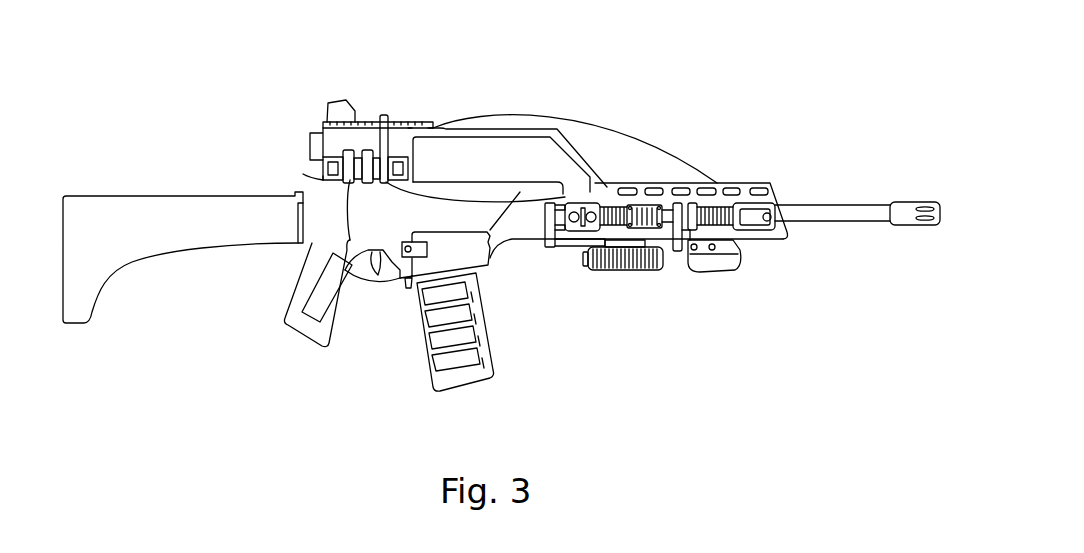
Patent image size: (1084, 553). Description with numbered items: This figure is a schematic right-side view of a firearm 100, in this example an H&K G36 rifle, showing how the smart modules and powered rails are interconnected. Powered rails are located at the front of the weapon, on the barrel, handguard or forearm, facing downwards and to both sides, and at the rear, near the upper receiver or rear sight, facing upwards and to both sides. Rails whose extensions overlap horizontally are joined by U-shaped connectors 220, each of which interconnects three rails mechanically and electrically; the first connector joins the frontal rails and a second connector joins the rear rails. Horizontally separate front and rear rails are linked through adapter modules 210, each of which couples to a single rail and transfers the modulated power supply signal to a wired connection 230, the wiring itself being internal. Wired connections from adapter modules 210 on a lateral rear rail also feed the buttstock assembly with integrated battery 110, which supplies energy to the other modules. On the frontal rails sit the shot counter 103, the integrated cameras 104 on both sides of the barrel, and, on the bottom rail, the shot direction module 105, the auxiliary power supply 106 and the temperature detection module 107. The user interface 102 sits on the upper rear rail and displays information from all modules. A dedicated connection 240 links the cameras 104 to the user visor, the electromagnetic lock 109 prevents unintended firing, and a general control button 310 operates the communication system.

The firearm 100 is at (238, 99).
The user interface 102 is at (343, 112).
The shot counter 103 is at (653, 205).
The integrated cameras 104 is at (773, 223).
The shot direction module 105 is at (713, 262).
The auxiliary power supply 106 is at (640, 273).
The temperature detection module 107 is at (552, 247).
The electromagnetic lock 109 is at (318, 305).
The buttstock assembly with integrated battery 110 is at (112, 222).
The adapter module 210 is at (365, 162).
The connector 220 is at (677, 252).
The wired connection 230 is at (352, 217).
The dedicated connection 240 is at (562, 117).
The general control button 310 is at (588, 202).